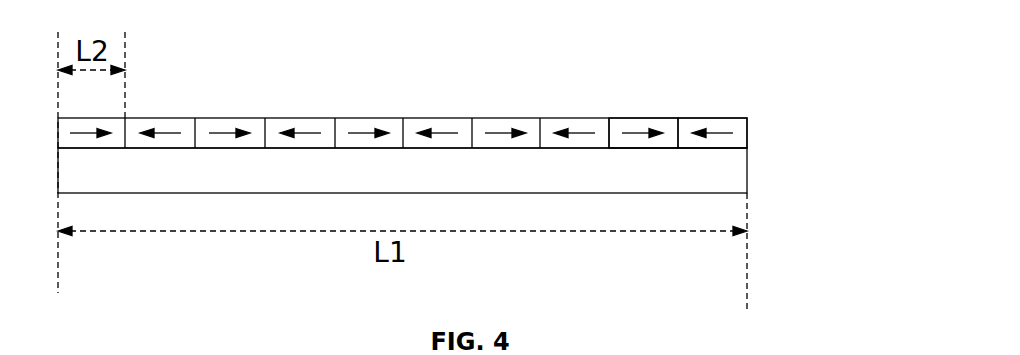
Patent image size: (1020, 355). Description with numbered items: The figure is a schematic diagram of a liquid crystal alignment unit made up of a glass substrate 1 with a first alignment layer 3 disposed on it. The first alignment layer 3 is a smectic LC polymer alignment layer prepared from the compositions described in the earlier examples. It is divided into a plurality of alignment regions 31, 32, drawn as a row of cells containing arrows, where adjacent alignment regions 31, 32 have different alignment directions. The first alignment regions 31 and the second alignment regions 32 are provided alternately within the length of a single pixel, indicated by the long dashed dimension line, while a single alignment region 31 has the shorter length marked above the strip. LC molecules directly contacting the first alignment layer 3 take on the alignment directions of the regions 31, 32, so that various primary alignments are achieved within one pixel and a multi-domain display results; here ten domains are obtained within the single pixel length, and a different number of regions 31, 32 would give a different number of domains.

The glass substrate 1 is at (462, 190).
The first alignment layer 3 is at (470, 77).
The first alignment region 31 is at (662, 62).
The second alignment region 32 is at (584, 96).